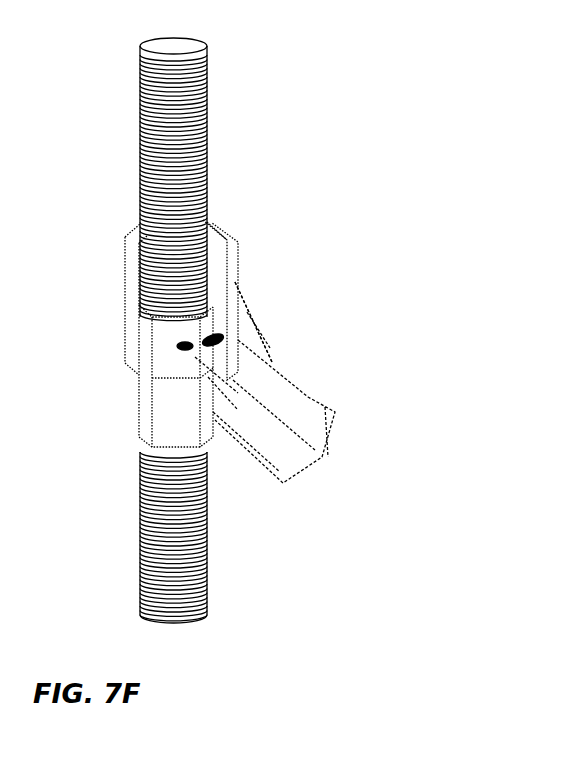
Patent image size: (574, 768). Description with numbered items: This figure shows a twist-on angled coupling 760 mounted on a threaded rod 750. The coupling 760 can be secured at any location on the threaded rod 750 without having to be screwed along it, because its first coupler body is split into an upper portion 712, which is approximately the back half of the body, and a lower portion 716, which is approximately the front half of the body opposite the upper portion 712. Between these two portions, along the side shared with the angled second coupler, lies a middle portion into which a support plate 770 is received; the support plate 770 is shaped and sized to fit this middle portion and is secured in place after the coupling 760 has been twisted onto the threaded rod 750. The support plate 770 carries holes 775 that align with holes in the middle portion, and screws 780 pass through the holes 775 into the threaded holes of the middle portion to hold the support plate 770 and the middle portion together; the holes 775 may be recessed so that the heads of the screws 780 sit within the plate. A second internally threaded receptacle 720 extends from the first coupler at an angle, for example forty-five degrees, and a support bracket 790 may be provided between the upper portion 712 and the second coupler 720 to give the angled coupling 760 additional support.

The twist-on angled coupling 760 is at (283, 165).
The threaded rod 750 is at (158, 138).
The upper portion 712 is at (130, 278).
The support plate 770 is at (140, 330).
The lower portion 716 is at (152, 415).
The holes 775 is at (190, 350).
The screws 780 is at (205, 340).
The second internally threaded receptacle 720 is at (295, 423).
The support bracket 790 is at (245, 330).